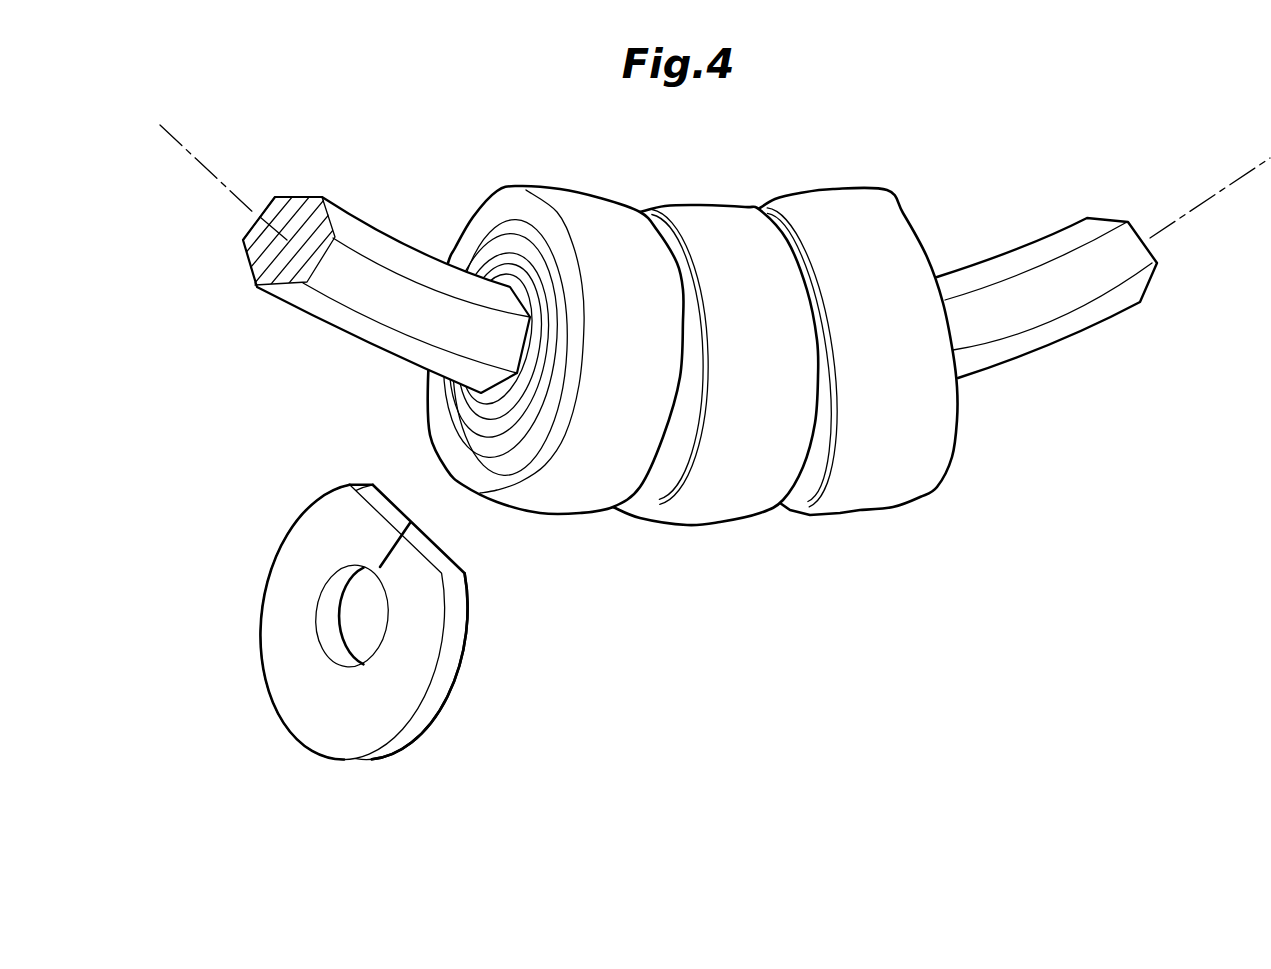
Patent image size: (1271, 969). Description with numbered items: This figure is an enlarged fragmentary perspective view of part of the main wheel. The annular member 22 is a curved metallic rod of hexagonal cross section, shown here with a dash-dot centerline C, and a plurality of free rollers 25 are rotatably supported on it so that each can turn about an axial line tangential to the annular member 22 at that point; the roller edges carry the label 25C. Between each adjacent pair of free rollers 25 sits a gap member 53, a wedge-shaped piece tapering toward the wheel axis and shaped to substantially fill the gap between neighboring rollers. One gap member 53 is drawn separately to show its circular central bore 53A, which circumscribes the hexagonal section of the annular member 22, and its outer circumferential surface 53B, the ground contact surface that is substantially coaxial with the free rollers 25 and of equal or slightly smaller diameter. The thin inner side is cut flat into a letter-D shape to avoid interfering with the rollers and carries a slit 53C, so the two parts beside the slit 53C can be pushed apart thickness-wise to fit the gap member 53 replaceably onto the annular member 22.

The annular member 22 is at (1017, 340).
The free rollers 25 is at (585, 186).
The chamfer of roller 25C is at (578, 490).
The gap member 53 is at (496, 613).
The circular central bore 53A is at (334, 593).
The outer circumferential surface 53B is at (400, 725).
The slit 53C is at (388, 542).
The axis C is at (205, 172).